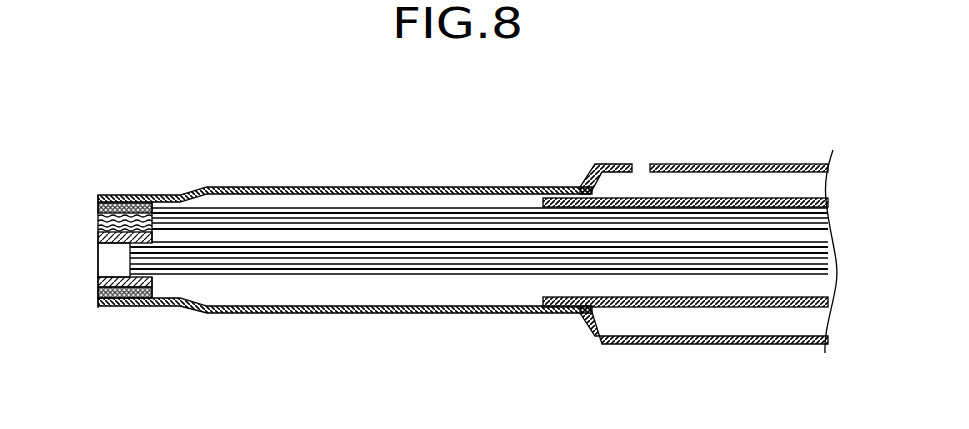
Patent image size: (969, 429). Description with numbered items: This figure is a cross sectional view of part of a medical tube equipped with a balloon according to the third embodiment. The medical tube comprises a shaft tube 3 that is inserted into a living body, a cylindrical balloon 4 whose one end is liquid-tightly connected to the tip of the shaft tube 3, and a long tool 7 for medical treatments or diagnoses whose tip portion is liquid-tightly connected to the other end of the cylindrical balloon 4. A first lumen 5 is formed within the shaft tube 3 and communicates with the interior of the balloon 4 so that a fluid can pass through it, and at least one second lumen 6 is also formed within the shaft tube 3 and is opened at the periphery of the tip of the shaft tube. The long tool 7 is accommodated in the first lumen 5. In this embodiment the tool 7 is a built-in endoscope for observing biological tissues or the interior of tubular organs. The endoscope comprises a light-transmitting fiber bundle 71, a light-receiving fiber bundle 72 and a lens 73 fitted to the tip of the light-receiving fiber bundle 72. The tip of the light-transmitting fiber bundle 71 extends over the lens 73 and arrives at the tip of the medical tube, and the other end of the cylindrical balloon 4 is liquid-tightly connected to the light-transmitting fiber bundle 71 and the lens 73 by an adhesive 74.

The shaft tube 3 is at (755, 165).
The cylindrical balloon 4 is at (388, 186).
The first lumen 5 is at (453, 295).
The second lumen 6 is at (702, 188).
The long tool for medical treatments or diagnoses 7 is at (86, 263).
The light-transmitting fiber bundle 71 is at (302, 220).
The light-receiving fiber bundle 72 is at (278, 265).
The lens 73 is at (115, 270).
The adhesive 74 is at (138, 197).